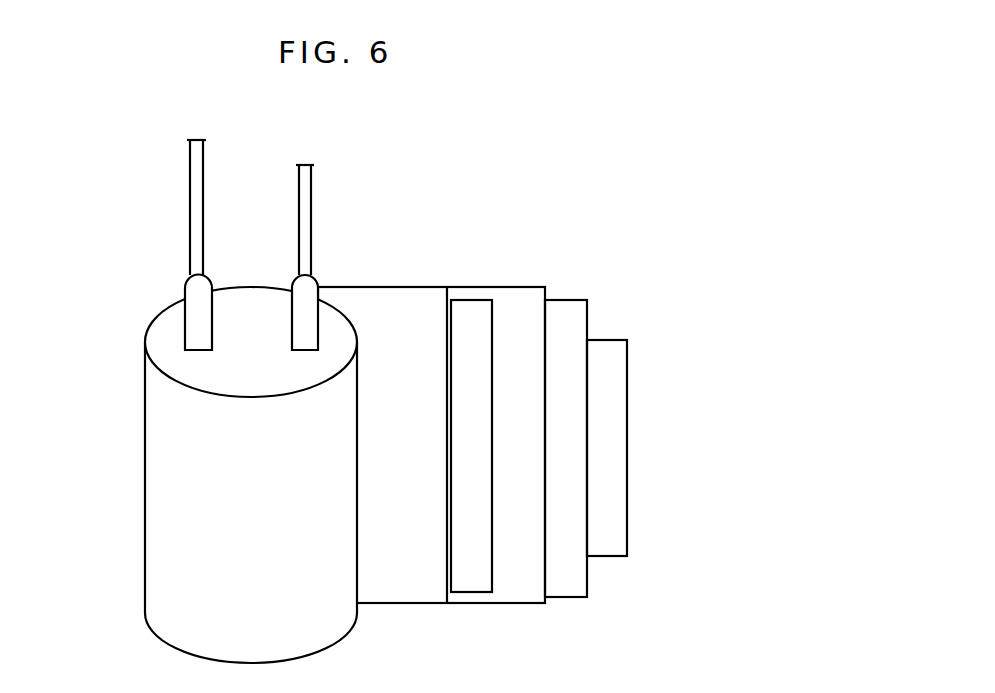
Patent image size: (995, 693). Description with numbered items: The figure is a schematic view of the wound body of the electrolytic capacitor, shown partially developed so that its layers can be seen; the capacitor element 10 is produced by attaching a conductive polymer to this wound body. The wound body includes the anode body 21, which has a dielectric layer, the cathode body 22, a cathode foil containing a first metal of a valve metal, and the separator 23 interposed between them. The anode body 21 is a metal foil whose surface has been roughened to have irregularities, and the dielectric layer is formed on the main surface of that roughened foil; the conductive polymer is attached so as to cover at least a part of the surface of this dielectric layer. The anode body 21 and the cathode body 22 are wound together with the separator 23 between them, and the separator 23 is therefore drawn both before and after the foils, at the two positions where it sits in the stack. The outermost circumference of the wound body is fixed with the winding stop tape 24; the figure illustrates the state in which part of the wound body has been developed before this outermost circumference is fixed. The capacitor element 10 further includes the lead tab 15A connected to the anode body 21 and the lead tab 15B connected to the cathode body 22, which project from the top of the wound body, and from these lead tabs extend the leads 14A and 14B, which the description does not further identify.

The capacitor element 10 is at (358, 375).
The first lead wire 14A is at (200, 182).
The second lead wire 14B is at (303, 173).
The lead tab 15A is at (197, 295).
The lead tab 15B is at (308, 295).
The anode body 21 is at (478, 572).
The cathode body 22 is at (566, 588).
The separator 23 is at (412, 572).
The winding stop tape 24 is at (606, 540).